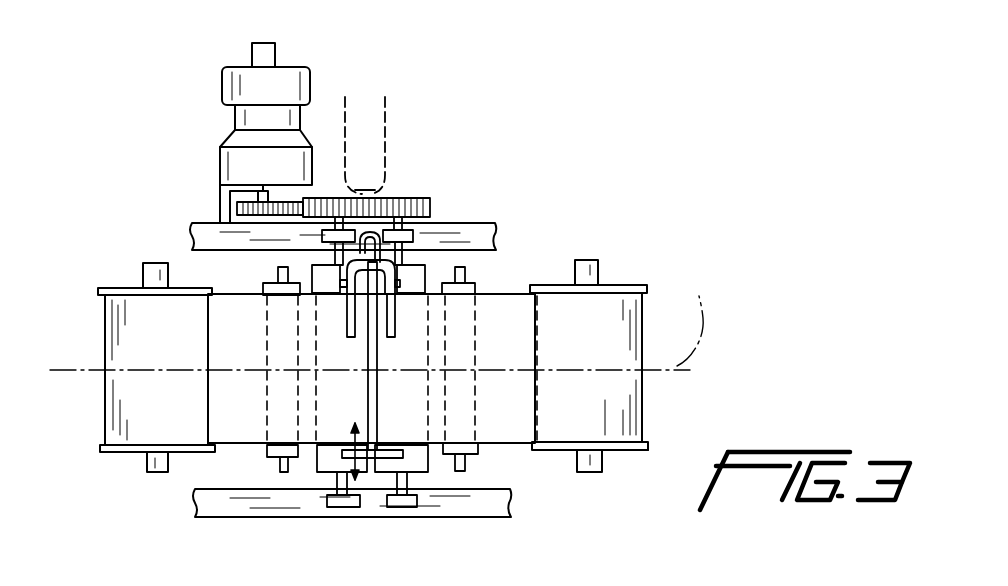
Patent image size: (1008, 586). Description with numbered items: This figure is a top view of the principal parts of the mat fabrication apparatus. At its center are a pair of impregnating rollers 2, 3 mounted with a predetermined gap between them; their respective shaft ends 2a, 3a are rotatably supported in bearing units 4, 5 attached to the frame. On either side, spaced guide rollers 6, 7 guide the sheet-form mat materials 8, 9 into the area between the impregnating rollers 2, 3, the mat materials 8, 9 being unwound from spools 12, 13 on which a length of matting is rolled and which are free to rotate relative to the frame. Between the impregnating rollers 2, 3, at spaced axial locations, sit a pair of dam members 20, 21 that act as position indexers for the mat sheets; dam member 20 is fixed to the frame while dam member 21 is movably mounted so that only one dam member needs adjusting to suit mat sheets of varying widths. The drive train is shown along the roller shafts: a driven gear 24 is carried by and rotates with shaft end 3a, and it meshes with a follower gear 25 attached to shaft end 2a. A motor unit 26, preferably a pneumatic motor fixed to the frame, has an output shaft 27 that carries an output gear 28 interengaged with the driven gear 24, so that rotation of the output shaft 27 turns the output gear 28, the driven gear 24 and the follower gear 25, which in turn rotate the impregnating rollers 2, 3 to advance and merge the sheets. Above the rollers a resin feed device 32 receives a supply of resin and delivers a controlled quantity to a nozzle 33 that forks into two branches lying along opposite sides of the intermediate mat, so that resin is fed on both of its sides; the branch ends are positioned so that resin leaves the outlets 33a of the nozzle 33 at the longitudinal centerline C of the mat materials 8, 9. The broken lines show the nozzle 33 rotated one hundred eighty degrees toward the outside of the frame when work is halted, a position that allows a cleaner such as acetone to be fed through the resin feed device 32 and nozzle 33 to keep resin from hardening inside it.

The impregnating roller 2 is at (423, 270).
The shaft end 2a is at (400, 260).
The impregnating roller 3 is at (320, 280).
The shaft end 3a is at (285, 262).
The bearing unit 4 is at (410, 233).
The bearing unit 5 is at (322, 228).
The guide roller 6 is at (478, 456).
The guide roller 7 is at (273, 457).
The mat material 8 is at (628, 415).
The mat material 9 is at (117, 397).
The spool 12 is at (623, 453).
The spool 13 is at (120, 457).
The dam member 20 is at (362, 278).
The dam member 21 is at (392, 460).
The driven gear 24 is at (362, 192).
The follower gear 25 is at (393, 198).
The motor unit 26 is at (247, 152).
The output shaft 27 is at (258, 191).
The output gear 28 is at (238, 208).
The resin feed device 32 is at (400, 313).
The nozzle 33 is at (390, 105).
The outlet 33a is at (377, 374).
The longitudinal centerline C is at (376, 322).